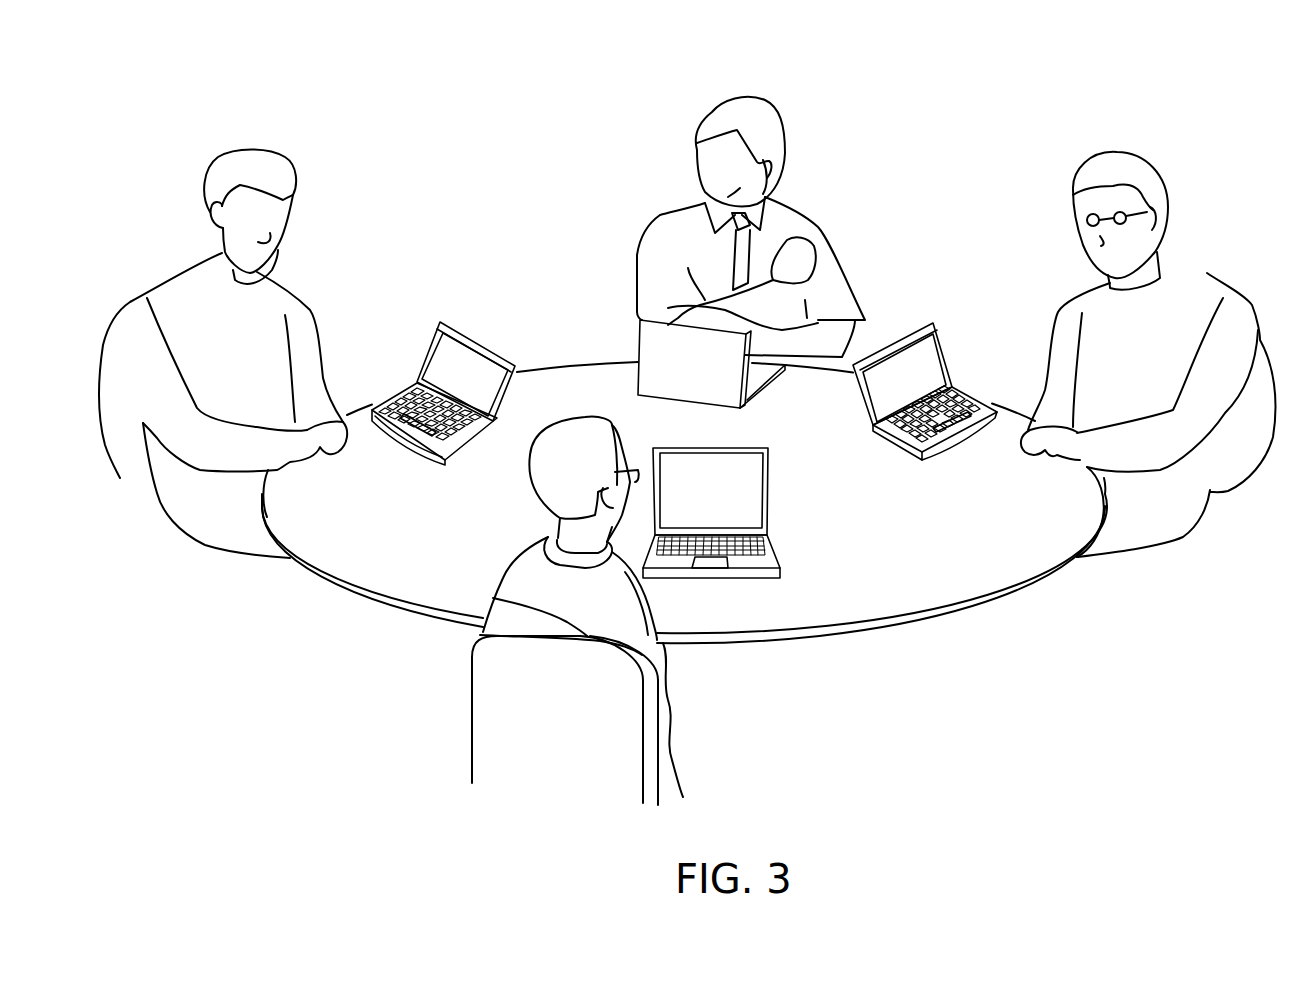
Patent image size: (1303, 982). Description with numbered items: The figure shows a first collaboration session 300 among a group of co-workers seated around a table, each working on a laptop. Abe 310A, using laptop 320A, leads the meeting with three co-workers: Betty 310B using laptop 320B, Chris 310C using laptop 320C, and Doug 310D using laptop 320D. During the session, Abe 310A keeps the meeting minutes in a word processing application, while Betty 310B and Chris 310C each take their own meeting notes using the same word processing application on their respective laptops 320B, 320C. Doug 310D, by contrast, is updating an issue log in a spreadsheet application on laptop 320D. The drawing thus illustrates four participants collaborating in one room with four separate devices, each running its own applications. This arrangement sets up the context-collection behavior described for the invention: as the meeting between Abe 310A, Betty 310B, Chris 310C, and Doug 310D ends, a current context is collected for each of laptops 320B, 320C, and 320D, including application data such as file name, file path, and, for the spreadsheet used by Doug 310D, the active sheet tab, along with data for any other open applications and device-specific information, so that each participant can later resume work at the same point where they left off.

The first collaboration session 300 is at (980, 127).
The Abe 310A is at (800, 214).
The Betty 310B is at (137, 290).
The Chris 310C is at (513, 564).
The Doug 310D is at (1229, 284).
The laptop 320A is at (637, 348).
The laptop 320B is at (438, 321).
The laptop 320C is at (770, 493).
The laptop 320D is at (929, 322).